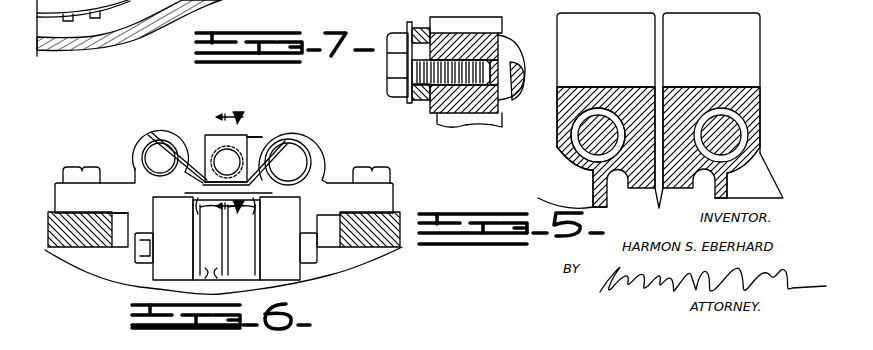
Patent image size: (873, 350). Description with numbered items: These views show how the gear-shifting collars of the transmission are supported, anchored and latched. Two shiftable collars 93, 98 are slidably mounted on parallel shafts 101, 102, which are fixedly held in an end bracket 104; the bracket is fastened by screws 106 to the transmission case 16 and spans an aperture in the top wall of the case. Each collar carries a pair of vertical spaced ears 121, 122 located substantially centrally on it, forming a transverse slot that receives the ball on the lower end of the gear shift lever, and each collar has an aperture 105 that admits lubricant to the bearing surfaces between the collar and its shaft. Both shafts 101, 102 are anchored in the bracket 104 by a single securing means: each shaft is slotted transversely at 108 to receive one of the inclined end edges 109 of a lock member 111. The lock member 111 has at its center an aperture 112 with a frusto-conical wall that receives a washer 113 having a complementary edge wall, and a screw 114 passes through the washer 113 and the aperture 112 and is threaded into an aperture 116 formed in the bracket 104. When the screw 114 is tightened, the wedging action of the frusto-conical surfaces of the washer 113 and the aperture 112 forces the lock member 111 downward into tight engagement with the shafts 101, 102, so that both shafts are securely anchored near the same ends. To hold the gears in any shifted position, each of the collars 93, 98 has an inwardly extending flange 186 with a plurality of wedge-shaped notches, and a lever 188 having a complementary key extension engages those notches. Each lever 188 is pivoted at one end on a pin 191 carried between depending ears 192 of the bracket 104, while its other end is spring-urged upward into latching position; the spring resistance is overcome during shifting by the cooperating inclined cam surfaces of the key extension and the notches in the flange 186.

In FIG. 6, the transmission case 16 is at (82, 245).
In FIG. 5, the shiftable collar 93 is at (752, 103).
In FIG. 5, the shiftable collar 98 is at (566, 112).
In FIG. 7, the shaft 101 is at (515, 53).
In FIG. 5, the shaft 101 is at (735, 130).
In FIG. 6, the shaft 101 is at (148, 158).
In FIG. 5, the shaft 102 is at (585, 131).
In FIG. 6, the shaft 102 is at (295, 150).
In FIG. 7, the bracket 104 is at (466, 22).
In FIG. 6, the bracket 104 is at (332, 178).
In FIG. 5, the aperture 105 is at (566, 146).
In FIG. 6, the screw 106 is at (382, 170).
In FIG. 6, the transverse slot 108 is at (150, 136).
In FIG. 6, the inclined end edge 109 is at (224, 172).
In FIG. 7, the lock member 111 is at (428, 105).
In FIG. 6, the lock member 111 is at (256, 135).
In FIG. 7, the aperture 112 is at (422, 30).
In FIG. 7, the washer 113 is at (409, 100).
In FIG. 7, the screw 114 is at (389, 75).
In FIG. 7, the threaded aperture 116 is at (512, 40).
In FIG. 5, the ear 121 is at (703, 22).
In FIG. 5, the ear 122 is at (600, 22).
In FIG. 5, the flange 186 is at (649, 207).
In FIG. 6, the lever 188 is at (226, 295).
In FIG. 6, the pin 191 is at (135, 255).
In FIG. 6, the depending ear 192 is at (163, 268).